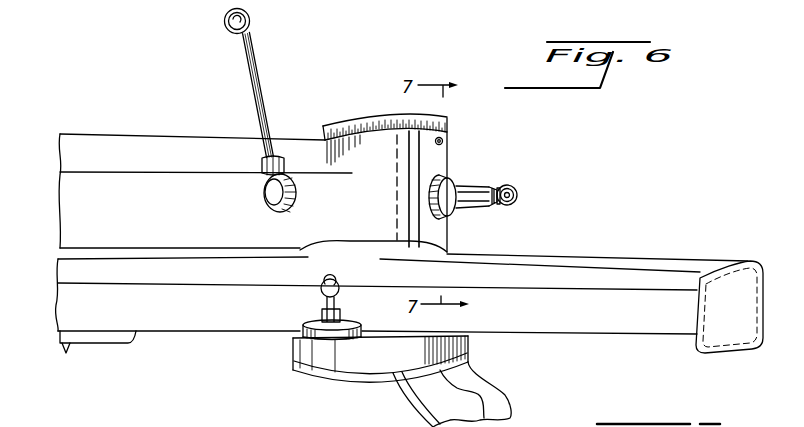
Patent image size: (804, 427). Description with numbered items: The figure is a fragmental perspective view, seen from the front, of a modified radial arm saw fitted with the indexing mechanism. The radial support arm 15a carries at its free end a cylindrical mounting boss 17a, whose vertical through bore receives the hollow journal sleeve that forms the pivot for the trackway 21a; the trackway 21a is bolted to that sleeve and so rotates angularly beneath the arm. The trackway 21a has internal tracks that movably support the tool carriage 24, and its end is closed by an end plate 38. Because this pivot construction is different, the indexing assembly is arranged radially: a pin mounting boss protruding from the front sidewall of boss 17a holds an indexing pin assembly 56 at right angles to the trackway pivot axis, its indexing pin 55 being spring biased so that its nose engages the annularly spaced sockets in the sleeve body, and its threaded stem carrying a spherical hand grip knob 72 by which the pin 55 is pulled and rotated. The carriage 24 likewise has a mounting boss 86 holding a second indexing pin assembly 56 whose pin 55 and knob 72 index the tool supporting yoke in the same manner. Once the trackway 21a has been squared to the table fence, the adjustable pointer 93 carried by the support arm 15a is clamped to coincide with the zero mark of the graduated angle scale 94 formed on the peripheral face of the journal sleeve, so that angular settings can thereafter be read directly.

The radial support arm 15a is at (130, 158).
The cylindrical mounting boss 17a is at (357, 145).
The trackway 21a is at (593, 284).
The tool carriage 24 is at (470, 348).
The end plate 38 is at (735, 337).
The indexing pin 55 is at (490, 203).
The indexing pin assembly 56 is at (470, 181).
The spherical hand grip knob 72 is at (333, 278).
The mounting boss 86 is at (352, 322).
The adjustable pointer 93 is at (442, 138).
The graduated angle scale 94 is at (400, 117).